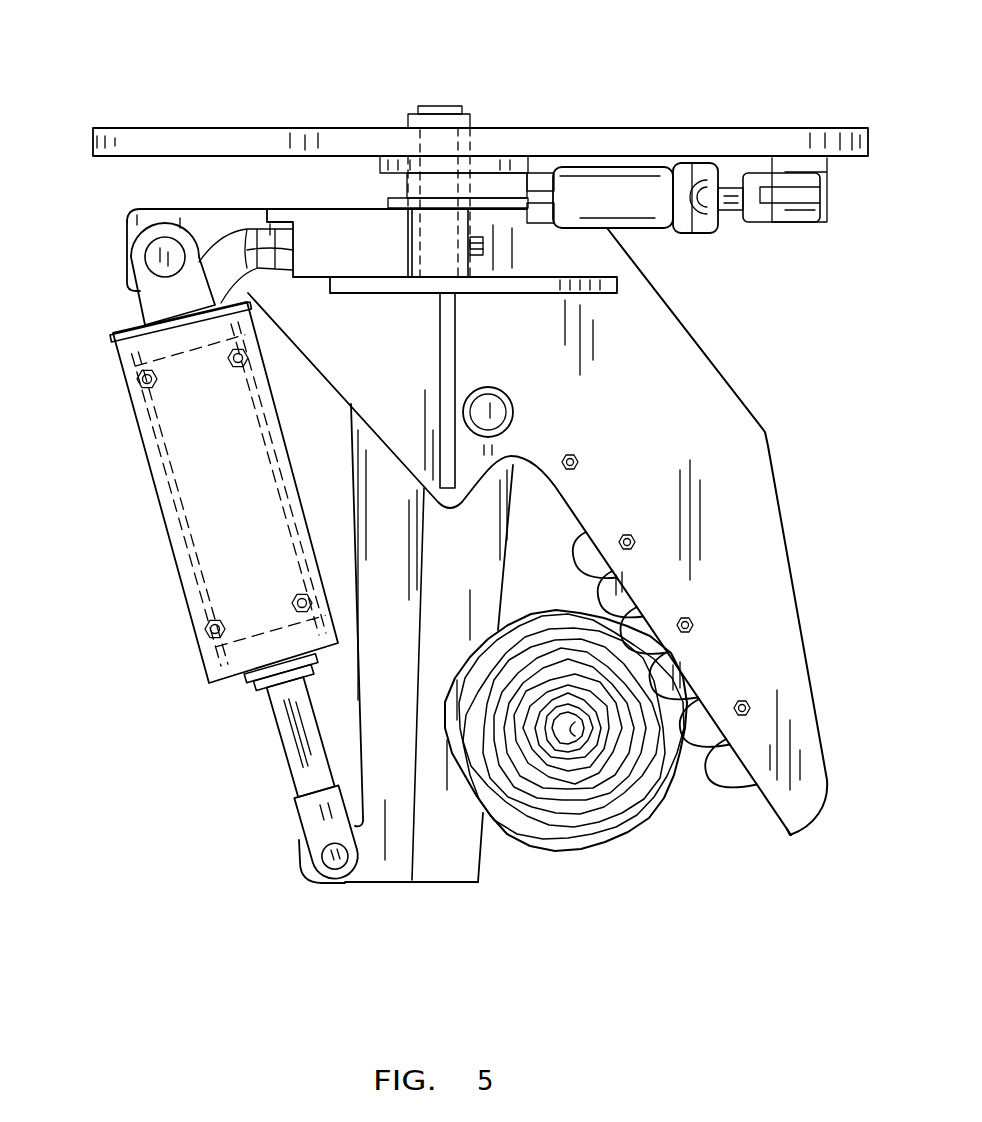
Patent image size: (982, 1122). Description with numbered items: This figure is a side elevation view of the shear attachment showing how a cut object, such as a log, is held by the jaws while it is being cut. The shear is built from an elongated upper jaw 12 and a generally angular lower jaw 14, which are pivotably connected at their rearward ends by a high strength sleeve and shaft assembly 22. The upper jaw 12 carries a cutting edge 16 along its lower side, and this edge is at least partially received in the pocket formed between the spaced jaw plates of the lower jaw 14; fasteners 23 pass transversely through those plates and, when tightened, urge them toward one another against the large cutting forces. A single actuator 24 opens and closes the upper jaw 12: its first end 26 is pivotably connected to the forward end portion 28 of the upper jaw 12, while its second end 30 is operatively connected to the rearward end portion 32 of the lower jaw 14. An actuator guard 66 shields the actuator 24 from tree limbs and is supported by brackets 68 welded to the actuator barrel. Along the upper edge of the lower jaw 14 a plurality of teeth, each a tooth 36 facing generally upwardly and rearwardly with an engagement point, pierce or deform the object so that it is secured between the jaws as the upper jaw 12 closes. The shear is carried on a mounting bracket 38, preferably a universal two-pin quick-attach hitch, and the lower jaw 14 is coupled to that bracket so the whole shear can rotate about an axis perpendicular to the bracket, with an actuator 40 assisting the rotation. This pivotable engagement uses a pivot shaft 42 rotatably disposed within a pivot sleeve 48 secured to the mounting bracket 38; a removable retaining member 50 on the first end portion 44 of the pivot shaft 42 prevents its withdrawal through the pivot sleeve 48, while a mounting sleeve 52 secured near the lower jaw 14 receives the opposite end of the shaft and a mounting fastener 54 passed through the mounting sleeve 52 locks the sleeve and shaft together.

The upper jaw 12 is at (393, 850).
The lower jaw 14 is at (760, 685).
The cutting edge 16 is at (485, 846).
The sleeve and shaft assembly 22 is at (513, 392).
The fastener 23 is at (562, 467).
The actuator 24 is at (170, 510).
The first end 26 is at (295, 830).
The forward end portion 28 is at (353, 888).
The second end 30 is at (163, 307).
The rearward end portion 32 is at (205, 231).
The tooth 36 is at (727, 767).
The mounting bracket 38 is at (477, 138).
The actuator 40 is at (632, 185).
The pivot shaft 42 is at (390, 137).
The first end portion 44 is at (452, 107).
The pivot sleeve 48 is at (400, 190).
The retaining member 50 is at (407, 113).
The mounting sleeve 52 is at (412, 245).
The mounting fastener 54 is at (483, 247).
The actuator guard 66 is at (180, 417).
The bracket 68 is at (215, 690).